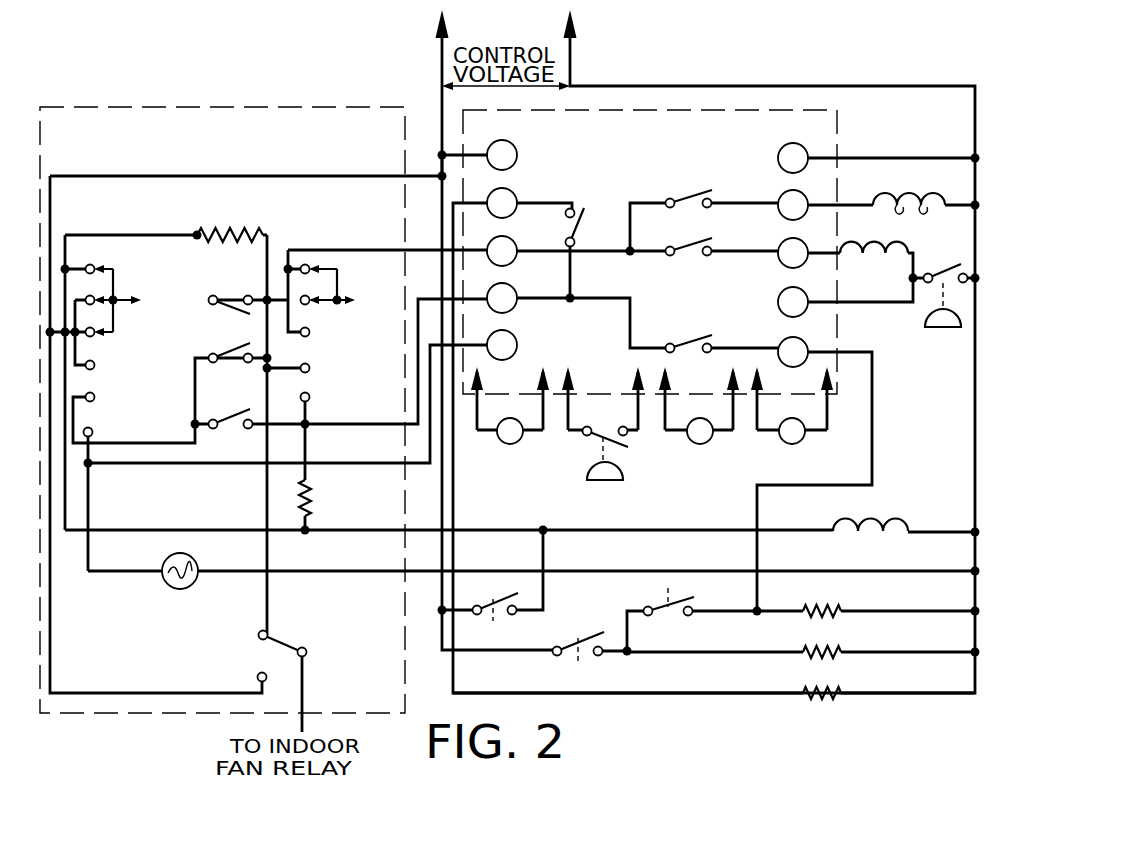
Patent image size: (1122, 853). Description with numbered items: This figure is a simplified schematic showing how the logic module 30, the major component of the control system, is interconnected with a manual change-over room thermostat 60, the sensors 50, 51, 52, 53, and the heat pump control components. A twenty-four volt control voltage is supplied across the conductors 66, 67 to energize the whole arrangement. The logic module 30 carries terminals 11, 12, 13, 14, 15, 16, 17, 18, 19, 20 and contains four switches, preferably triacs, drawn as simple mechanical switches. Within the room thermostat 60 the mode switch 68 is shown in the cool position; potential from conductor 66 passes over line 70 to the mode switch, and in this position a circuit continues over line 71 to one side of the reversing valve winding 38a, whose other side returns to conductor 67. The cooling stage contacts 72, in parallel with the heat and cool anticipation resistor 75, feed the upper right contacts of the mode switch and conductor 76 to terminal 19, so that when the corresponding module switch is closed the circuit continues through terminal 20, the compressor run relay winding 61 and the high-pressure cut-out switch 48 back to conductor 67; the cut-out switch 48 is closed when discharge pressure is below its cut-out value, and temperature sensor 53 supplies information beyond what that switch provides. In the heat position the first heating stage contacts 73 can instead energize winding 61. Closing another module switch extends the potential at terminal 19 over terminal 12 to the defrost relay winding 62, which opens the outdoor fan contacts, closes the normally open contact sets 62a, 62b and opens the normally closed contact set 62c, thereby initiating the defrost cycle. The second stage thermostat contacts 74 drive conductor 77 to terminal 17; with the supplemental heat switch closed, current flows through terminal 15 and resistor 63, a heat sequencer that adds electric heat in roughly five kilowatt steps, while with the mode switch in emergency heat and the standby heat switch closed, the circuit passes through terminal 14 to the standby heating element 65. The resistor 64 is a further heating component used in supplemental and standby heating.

The room thermostat 60 is at (244, 165).
The logic module 30 is at (648, 168).
The conductor 66 is at (442, 79).
The conductor 67 is at (639, 86).
The mode switch 68 is at (140, 212).
The line 70 is at (428, 173).
The line 71 is at (168, 530).
The cooling stage contacts 72 is at (225, 318).
The first heating stage contacts 73 is at (226, 386).
The second stage thermostat contacts 74 is at (226, 442).
The heat and cool anticipation resistor 75 is at (230, 248).
The conductor 76 is at (431, 249).
The conductor 77 is at (424, 299).
The terminal 11 is at (502, 155).
The terminal 12 is at (793, 205).
The terminal 13 is at (793, 158).
The terminal 14 is at (502, 203).
The terminal 15 is at (793, 352).
The terminal 16 is at (502, 345).
The terminal 17 is at (502, 298).
The terminal 18 is at (793, 302).
The terminal 19 is at (502, 251).
The terminal 20 is at (793, 253).
The high-pressure cut-out switch 48 is at (891, 312).
The sensor 50 is at (792, 446).
The sensor 51 is at (603, 470).
The sensor 52 is at (510, 446).
The temperature sensor 53 is at (699, 446).
The compressor run relay winding 61 is at (860, 256).
The defrost relay winding 62 is at (921, 214).
The normally open contact set 62a is at (492, 585).
The normally open contact set 62b is at (601, 645).
The normally closed contact set 62c is at (724, 615).
The resistor 63 is at (889, 600).
The resistor 64 is at (801, 642).
The heating element 65 is at (714, 682).
The reversing valve winding 38a is at (899, 534).